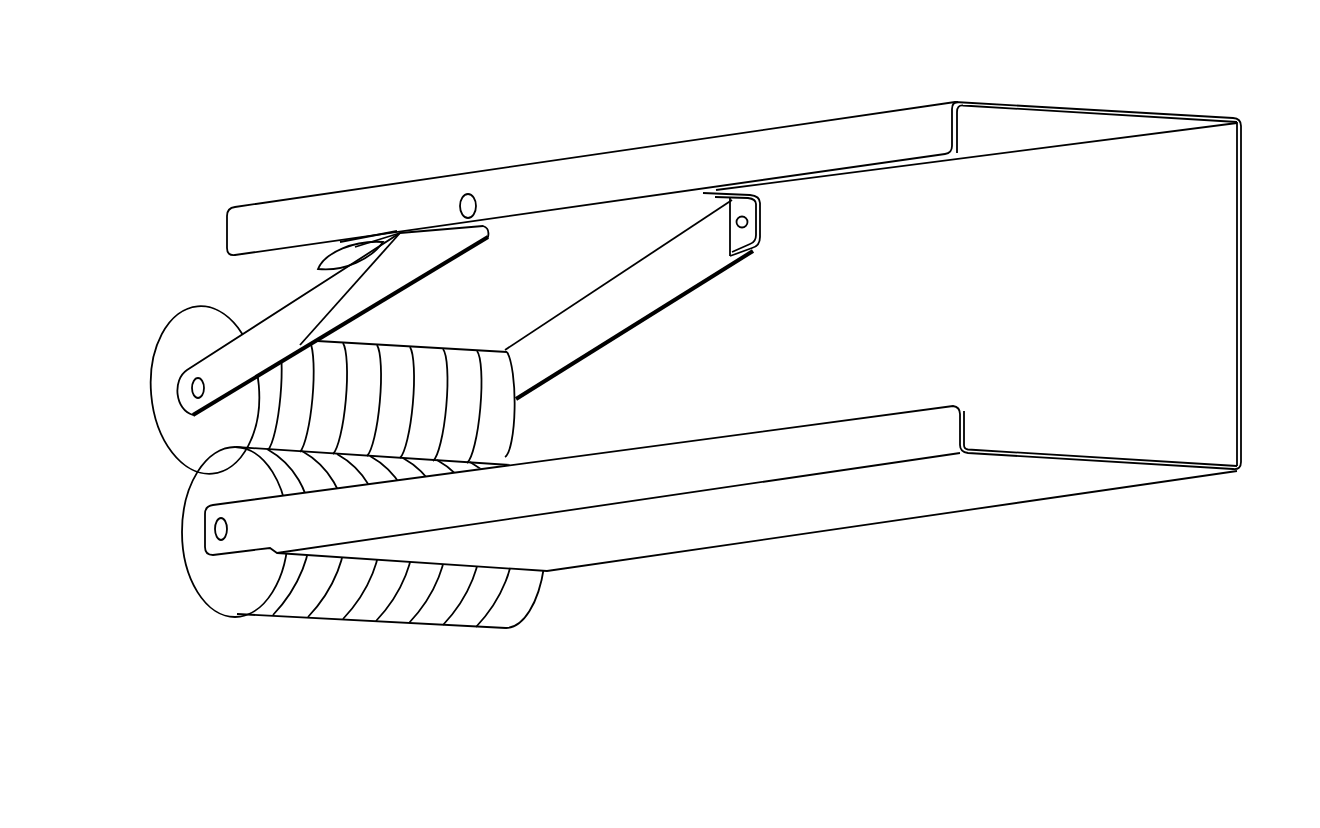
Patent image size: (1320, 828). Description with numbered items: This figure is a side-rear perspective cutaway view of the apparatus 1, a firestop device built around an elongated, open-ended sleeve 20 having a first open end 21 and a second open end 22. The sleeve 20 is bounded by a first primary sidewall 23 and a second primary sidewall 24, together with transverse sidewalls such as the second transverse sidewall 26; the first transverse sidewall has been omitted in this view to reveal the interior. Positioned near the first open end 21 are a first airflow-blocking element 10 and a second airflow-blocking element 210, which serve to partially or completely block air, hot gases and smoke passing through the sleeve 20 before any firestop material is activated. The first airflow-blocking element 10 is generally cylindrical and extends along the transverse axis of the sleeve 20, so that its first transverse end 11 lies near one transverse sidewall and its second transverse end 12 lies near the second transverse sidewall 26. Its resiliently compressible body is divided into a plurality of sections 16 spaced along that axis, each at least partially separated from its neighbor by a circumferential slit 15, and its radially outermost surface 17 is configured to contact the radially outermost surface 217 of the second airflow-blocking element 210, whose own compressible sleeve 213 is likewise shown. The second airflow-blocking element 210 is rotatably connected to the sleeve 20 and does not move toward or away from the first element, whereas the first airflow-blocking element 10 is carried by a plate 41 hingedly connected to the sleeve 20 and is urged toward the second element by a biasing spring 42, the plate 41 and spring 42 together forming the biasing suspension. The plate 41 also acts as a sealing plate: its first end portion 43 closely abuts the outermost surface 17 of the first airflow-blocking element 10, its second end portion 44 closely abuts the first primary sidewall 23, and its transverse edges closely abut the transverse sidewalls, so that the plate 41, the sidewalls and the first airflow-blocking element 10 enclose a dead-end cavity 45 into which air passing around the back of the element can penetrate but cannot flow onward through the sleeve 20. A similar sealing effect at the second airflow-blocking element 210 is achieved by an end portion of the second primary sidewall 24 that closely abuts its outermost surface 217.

The apparatus 1 is at (1135, 97).
The first airflow-blocking element 10 is at (158, 403).
The first transverse end 11 is at (185, 362).
The second transverse end 12 is at (513, 418).
The slit 15 is at (442, 440).
The section 16 is at (425, 442).
The radially outermost surface 17 is at (293, 423).
The sleeve 20 is at (994, 82).
The first open end 21 is at (150, 489).
The second open end 22 is at (1250, 258).
The first primary sidewall 23 is at (1070, 102).
The second primary sidewall 24 is at (877, 505).
The second transverse sidewall 26 is at (1218, 165).
The plate 41 is at (587, 273).
The biasing spring 42 is at (318, 269).
The first end portion 43 is at (457, 347).
The second end portion 44 is at (730, 257).
The dead-end cavity 45 is at (224, 274).
The second airflow-blocking element 210 is at (217, 593).
The sleeve 213 is at (260, 607).
The radially outermost surface 217 is at (298, 607).